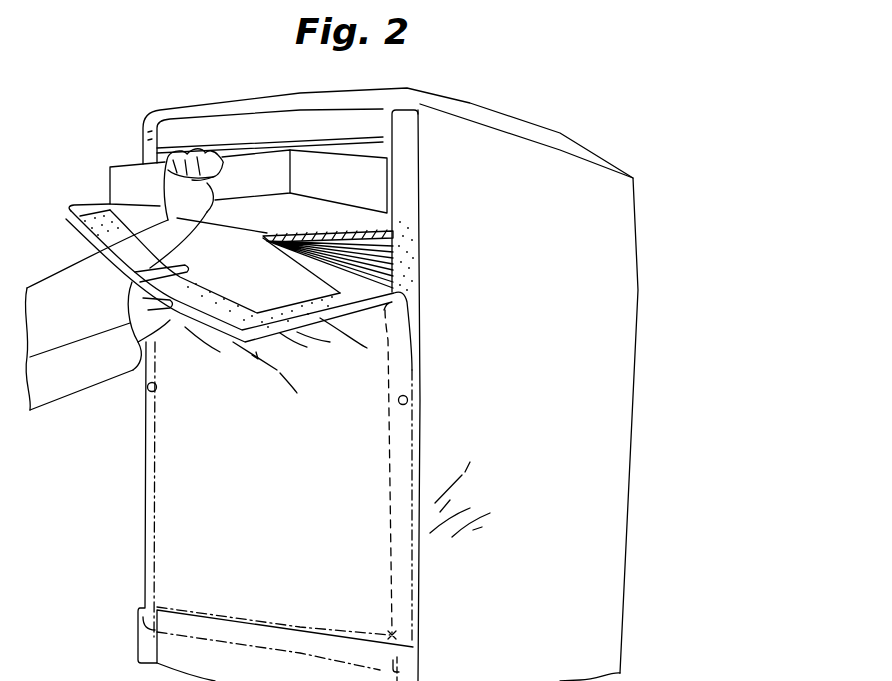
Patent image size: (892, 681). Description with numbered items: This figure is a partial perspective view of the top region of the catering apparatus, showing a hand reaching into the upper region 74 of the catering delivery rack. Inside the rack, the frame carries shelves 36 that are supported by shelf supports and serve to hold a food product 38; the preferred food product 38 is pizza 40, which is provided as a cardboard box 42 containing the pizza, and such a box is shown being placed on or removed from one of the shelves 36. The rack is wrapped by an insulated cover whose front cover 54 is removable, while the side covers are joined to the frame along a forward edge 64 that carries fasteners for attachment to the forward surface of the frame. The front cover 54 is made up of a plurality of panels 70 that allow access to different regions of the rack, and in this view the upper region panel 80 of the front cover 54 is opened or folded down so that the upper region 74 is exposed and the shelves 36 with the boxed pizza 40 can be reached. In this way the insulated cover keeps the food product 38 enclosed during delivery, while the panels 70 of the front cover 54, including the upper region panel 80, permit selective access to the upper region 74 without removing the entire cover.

The shelves 36 is at (372, 262).
The food product 38 is at (370, 193).
The pizza 40 is at (335, 185).
The cardboard box 42 is at (262, 187).
The front cover 54 is at (278, 459).
The forward edge 64 is at (407, 296).
The panels 70 is at (172, 491).
The upper region 74 is at (122, 427).
The upper region panel 80 is at (304, 518).